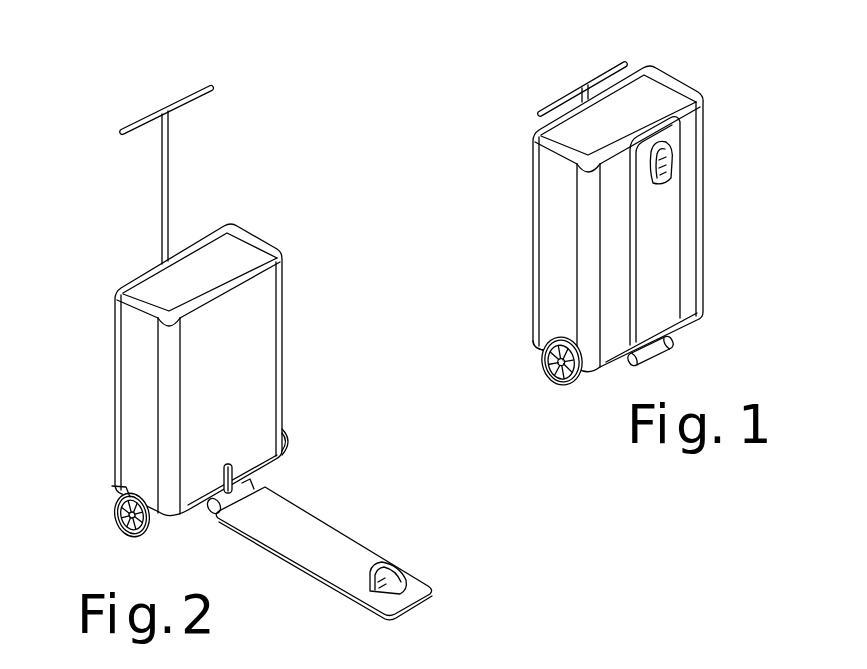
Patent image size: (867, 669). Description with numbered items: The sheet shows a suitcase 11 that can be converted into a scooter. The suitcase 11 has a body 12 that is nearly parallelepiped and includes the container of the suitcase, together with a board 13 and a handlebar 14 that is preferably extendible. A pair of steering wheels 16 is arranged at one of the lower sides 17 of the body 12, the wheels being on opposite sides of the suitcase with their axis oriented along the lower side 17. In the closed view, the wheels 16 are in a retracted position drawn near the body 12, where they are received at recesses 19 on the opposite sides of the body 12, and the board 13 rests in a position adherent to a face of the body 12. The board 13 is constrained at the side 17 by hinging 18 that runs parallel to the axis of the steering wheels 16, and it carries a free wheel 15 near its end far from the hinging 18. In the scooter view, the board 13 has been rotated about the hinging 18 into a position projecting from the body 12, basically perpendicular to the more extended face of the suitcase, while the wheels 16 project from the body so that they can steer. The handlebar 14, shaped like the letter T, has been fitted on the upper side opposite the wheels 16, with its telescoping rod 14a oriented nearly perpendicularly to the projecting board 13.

In FIG. 1, the suitcase 11 is at (494, 105).
In FIG. 1, the body 12 is at (553, 207).
In FIG. 2, the body 12 is at (225, 345).
In FIG. 1, the board 13 is at (656, 217).
In FIG. 2, the board 13 is at (292, 527).
In FIG. 1, the handlebar 14 is at (583, 92).
In FIG. 2, the handlebar 14 is at (192, 104).
In FIG. 2, the telescoping rod 14a is at (170, 176).
In FIG. 1, the free wheel 15 is at (665, 157).
In FIG. 2, the free wheel 15 is at (388, 568).
In FIG. 1, the steering wheels 16 is at (545, 367).
In FIG. 2, the steering wheels 16 is at (291, 445).
In FIG. 1, the lower side 17 is at (699, 322).
In FIG. 1, the hinging 18 is at (658, 357).
In FIG. 2, the hinging 18 is at (250, 487).
In FIG. 2, the recesses 19 is at (112, 489).